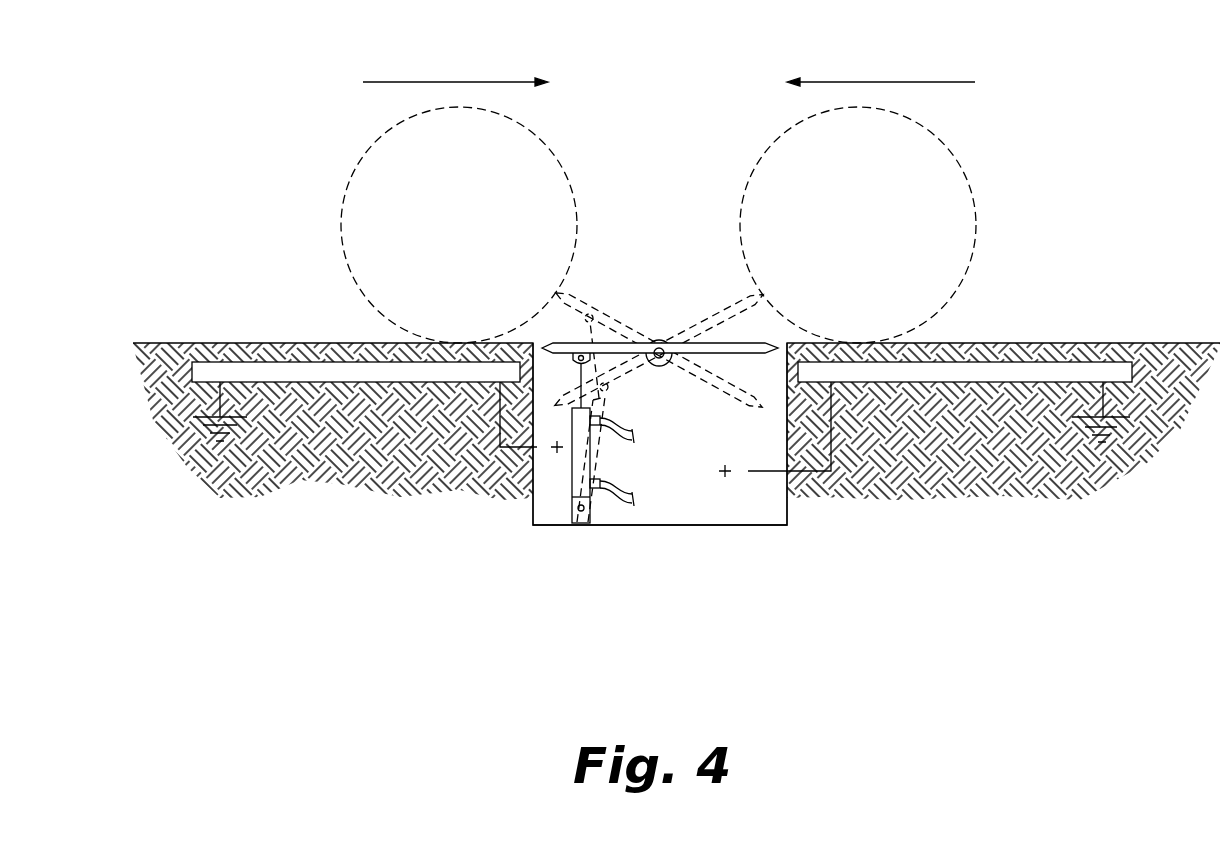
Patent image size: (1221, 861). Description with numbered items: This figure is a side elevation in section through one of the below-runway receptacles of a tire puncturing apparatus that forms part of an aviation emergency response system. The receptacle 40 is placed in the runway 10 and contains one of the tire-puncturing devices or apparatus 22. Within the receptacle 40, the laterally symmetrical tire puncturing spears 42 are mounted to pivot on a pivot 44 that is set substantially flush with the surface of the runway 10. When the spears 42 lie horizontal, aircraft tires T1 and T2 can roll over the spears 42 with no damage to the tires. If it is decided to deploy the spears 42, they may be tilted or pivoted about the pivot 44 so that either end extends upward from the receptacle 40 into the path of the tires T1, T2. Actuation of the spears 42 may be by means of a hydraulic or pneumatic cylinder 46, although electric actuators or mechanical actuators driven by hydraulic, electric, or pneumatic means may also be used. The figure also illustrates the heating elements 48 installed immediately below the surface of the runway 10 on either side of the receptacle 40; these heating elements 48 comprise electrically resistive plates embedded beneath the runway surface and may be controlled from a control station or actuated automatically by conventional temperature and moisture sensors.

The runway 10 is at (210, 343).
The tire-puncturing apparatus 22 is at (656, 198).
The receptacle 40 is at (706, 453).
The tire puncturing spears 42 is at (743, 342).
The pivot 44 is at (659, 366).
The hydraulic or pneumatic cylinder 46 is at (598, 455).
The heating elements 48 is at (300, 343).
The aircraft tire T1 is at (360, 157).
The aircraft tire T2 is at (960, 163).